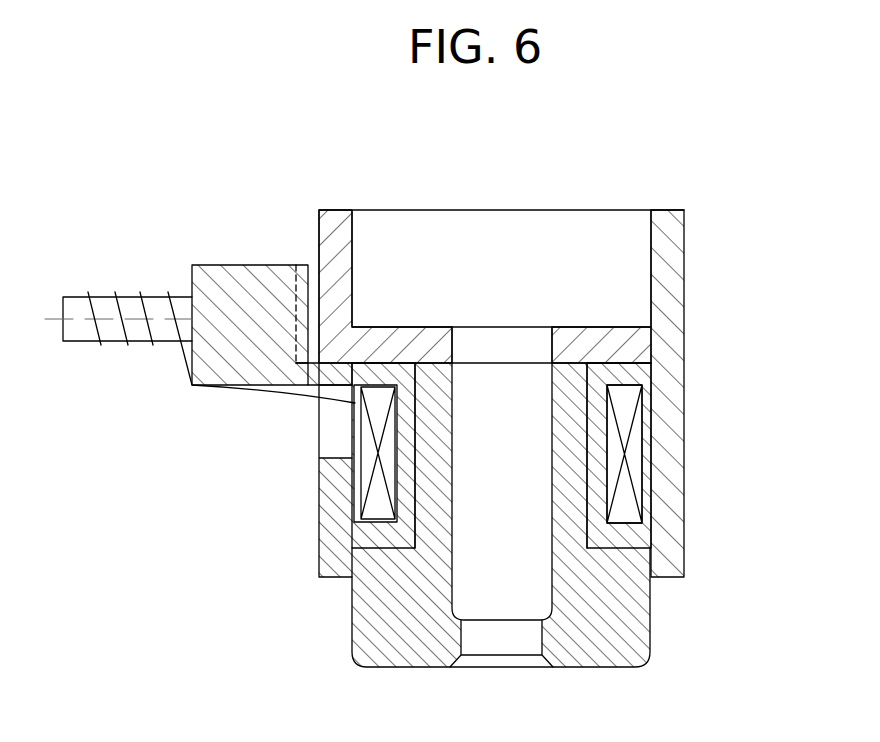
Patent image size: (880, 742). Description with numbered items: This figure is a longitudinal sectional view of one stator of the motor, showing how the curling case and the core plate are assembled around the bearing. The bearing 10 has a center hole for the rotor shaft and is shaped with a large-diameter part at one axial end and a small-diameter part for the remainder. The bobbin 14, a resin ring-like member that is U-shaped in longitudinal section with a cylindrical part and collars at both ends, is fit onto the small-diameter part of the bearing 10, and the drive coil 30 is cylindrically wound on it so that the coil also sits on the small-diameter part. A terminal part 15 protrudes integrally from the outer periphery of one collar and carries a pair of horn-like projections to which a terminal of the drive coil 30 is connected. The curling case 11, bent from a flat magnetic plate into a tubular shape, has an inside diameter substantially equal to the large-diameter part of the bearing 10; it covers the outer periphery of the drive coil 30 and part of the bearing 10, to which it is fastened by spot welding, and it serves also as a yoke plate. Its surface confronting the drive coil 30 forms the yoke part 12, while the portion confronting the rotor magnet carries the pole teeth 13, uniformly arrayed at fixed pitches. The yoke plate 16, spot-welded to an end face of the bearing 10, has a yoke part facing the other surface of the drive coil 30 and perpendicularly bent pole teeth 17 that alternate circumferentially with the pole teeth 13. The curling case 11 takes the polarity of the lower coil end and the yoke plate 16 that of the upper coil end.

The bearing 10 is at (357, 662).
The curling case 11 is at (446, 424).
The yoke part 12 is at (318, 558).
The pole teeth 13 is at (667, 240).
The bobbin 14 is at (405, 485).
The terminal part 15 is at (253, 265).
The yoke plate 16 is at (573, 367).
The pole teeth 17 is at (318, 210).
The drive coil 30 is at (363, 430).